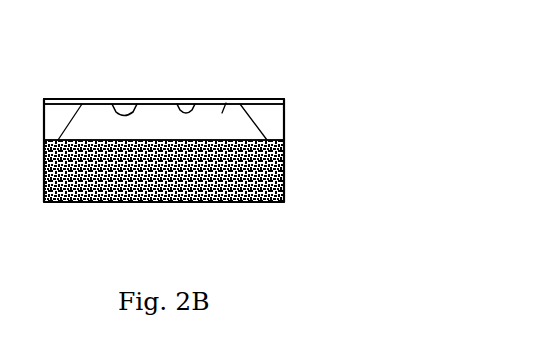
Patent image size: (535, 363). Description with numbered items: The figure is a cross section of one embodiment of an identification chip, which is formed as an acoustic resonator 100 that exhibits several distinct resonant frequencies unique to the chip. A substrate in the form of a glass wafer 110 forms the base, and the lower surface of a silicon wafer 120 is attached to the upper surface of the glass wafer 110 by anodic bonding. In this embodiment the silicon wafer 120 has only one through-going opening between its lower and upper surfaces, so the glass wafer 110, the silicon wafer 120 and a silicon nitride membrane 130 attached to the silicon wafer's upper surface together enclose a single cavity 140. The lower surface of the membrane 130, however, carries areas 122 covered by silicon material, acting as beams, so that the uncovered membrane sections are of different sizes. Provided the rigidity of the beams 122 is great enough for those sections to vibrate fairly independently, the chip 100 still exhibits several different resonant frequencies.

The acoustic resonator 100 is at (58, 243).
The glass wafer 110 is at (283, 170).
The silicon wafer 120 is at (281, 117).
The areas covered by silicon material 122 is at (185, 108).
The membrane 130 is at (272, 98).
The cavity 140 is at (226, 103).